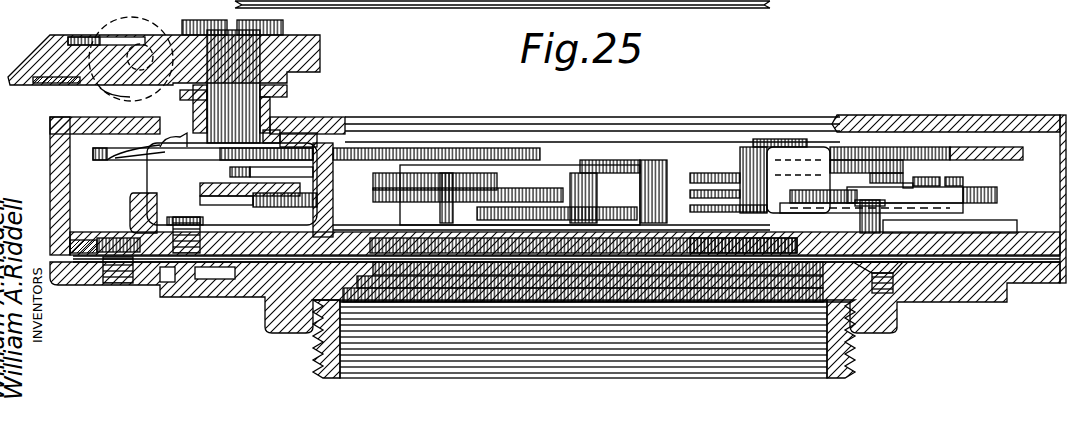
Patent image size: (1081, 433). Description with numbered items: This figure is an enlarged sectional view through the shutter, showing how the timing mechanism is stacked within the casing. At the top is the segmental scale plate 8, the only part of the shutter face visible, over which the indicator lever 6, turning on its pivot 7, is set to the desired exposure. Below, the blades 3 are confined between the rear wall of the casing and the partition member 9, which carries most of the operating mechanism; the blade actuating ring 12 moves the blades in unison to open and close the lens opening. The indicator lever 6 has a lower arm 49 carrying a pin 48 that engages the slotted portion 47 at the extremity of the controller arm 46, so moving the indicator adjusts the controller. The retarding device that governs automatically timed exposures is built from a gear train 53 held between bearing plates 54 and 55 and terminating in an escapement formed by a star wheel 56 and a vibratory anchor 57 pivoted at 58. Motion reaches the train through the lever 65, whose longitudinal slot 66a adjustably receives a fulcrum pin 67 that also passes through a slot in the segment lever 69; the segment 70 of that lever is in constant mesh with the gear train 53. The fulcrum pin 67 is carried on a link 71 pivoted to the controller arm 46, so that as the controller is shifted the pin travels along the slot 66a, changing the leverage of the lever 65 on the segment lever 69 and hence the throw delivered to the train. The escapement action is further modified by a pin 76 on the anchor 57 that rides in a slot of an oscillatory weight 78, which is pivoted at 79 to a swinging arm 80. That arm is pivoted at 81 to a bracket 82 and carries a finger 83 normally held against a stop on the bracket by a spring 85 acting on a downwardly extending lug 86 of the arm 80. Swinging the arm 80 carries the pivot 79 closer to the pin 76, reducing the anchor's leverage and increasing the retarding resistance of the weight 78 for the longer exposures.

The blades 3 is at (566, 251).
The indicator lever 6 is at (102, 92).
The pivot 7 is at (248, 62).
The segmental scale plate 8 is at (53, 40).
The partition member 9 is at (82, 238).
The blade actuating ring 12 is at (975, 265).
The arm of controlling lever 46 is at (641, 150).
The slotted portion 47 is at (165, 162).
The pin 48 is at (200, 162).
The lower arm 49 is at (125, 160).
The gear train 53 is at (543, 177).
The bearing plate 54 is at (493, 166).
The bearing plate 55 is at (1015, 232).
The star wheel 56 is at (723, 175).
The vibratory anchor 57 is at (745, 205).
The pivot 58 is at (905, 180).
The lever 65 is at (220, 203).
The longitudinal slot 66a is at (175, 197).
The fulcrum pin 67 is at (280, 205).
The segment lever 69 is at (225, 192).
The segment 70 is at (425, 170).
The link 71 is at (232, 172).
The pin 76 is at (910, 180).
The oscillatory weight 78 is at (998, 193).
The pivot 79 is at (950, 180).
The swinging arm 80 is at (965, 208).
The pivot 81 is at (840, 190).
The bracket 82 is at (811, 153).
The finger 83 is at (790, 200).
The spring 85 is at (885, 225).
The lug 86 is at (880, 270).